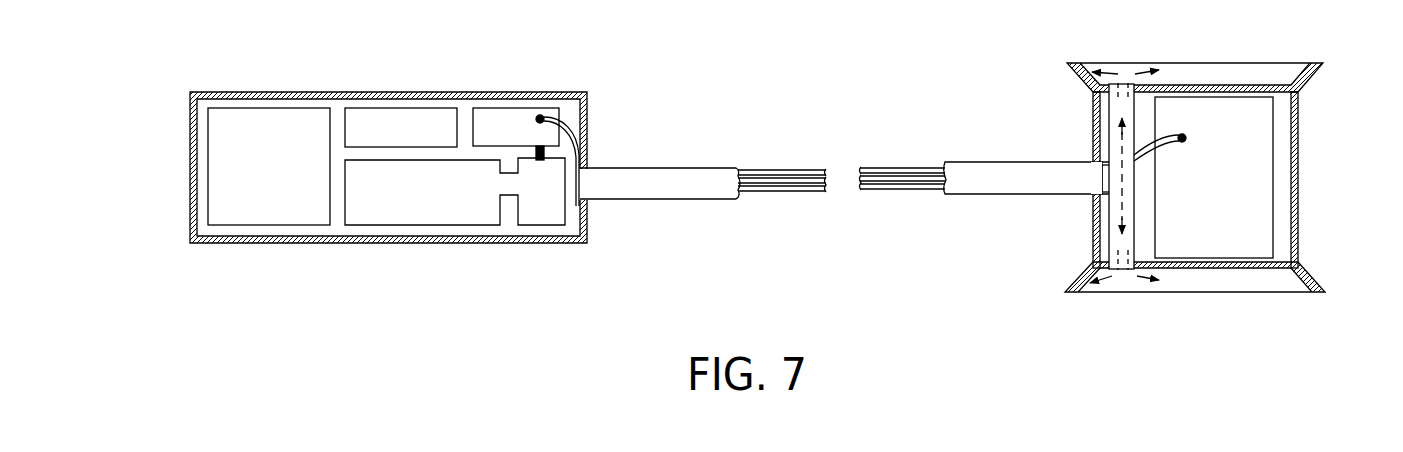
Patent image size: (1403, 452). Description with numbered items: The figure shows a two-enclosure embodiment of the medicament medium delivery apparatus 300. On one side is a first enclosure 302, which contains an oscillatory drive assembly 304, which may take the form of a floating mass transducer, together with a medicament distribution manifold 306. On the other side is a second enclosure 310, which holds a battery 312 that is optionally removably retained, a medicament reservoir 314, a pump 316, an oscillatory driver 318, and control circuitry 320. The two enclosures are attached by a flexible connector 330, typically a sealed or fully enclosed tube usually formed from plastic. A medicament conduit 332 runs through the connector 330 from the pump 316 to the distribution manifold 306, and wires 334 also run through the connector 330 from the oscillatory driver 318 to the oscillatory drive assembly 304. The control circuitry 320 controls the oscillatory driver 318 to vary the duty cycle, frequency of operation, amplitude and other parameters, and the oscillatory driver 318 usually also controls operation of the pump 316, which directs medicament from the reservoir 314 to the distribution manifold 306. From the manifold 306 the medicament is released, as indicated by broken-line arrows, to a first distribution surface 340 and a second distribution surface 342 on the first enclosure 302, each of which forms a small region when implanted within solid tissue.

The apparatus 300 is at (318, 290).
The first enclosure 302 is at (1204, 180).
The oscillatory drive assembly 304 is at (1248, 188).
The medicament distribution manifold 306 is at (1109, 226).
The second enclosure 310 is at (487, 243).
The battery 312 is at (218, 190).
The medicament reservoir 314 is at (367, 207).
The pump 316 is at (583, 210).
The oscillatory driver 318 is at (507, 120).
The control circuitry 320 is at (398, 123).
The flexible connector 330 is at (664, 177).
The medicament conduit 332 is at (773, 187).
The wires 334 is at (792, 170).
The first distribution surface 340 is at (1210, 85).
The second distribution surface 342 is at (1173, 268).